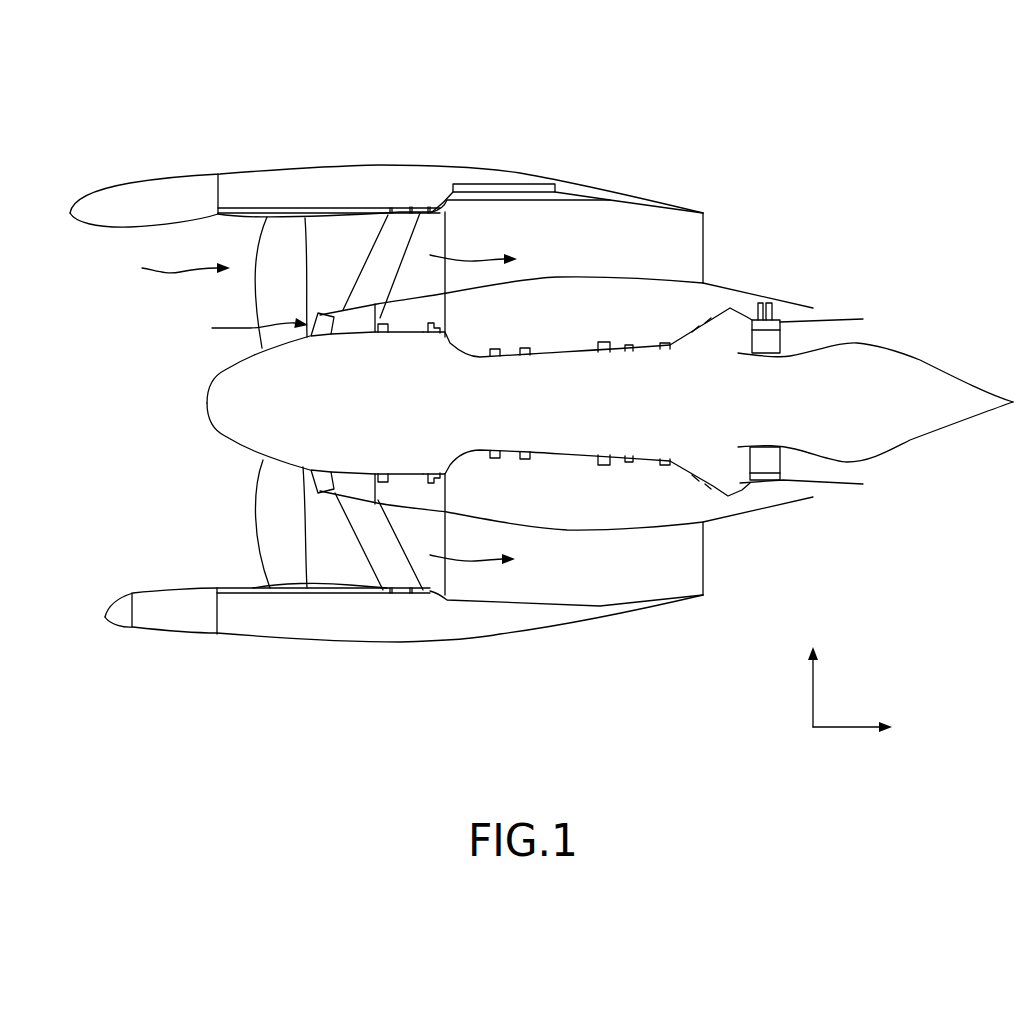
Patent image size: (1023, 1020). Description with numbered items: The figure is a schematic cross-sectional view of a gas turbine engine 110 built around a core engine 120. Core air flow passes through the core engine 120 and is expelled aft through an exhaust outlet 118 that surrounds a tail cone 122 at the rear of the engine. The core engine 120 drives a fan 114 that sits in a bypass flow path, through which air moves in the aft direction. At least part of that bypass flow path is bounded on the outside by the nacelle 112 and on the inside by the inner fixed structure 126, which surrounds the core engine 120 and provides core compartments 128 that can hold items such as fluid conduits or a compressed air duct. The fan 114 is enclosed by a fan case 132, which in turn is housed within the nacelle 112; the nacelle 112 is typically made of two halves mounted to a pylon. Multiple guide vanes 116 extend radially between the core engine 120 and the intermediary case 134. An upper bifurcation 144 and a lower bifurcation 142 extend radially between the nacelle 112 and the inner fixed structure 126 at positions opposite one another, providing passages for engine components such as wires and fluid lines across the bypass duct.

The gas turbine engine 110 is at (710, 126).
The nacelle 112 is at (254, 160).
The fan 114 is at (263, 515).
The guide vanes 116 is at (380, 265).
The exhaust outlet 118 is at (860, 332).
The core engine 120 is at (586, 336).
The tail cone 122 is at (902, 436).
The inner fixed structure 126 is at (597, 260).
The core compartment 128 is at (601, 514).
The fan case 132 is at (250, 593).
The intermediary case 134 is at (420, 597).
The lower bifurcation 142 is at (680, 585).
The upper bifurcation 144 is at (700, 230).